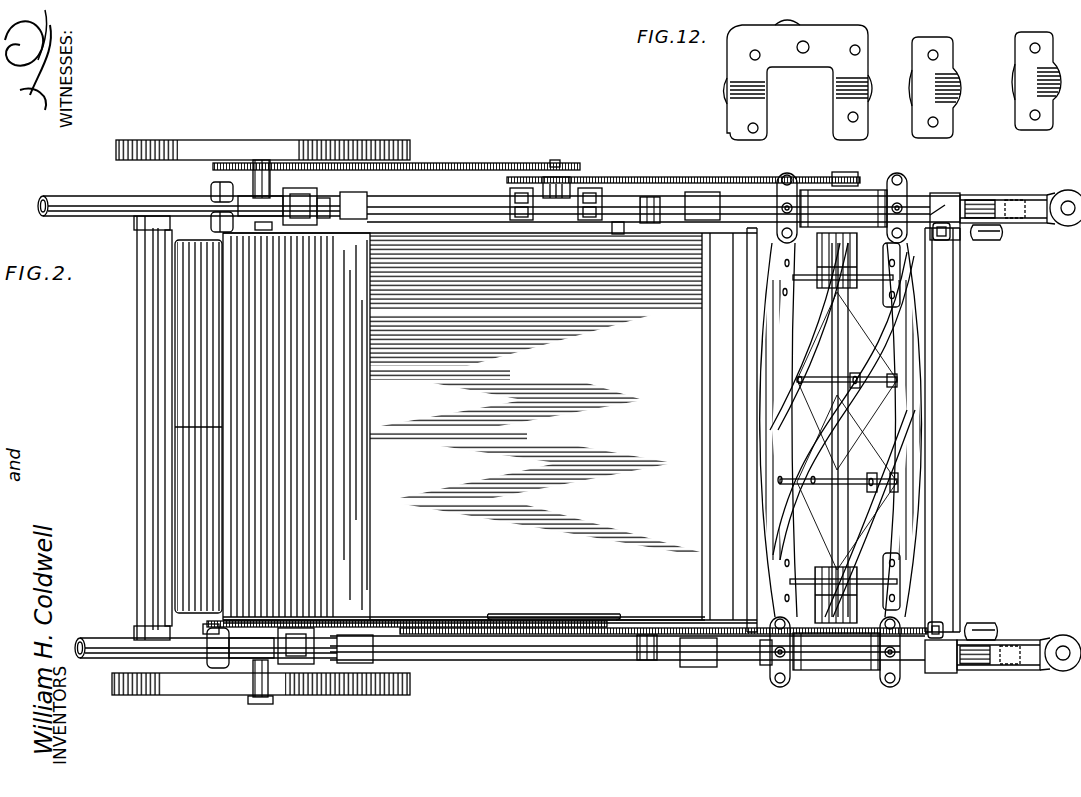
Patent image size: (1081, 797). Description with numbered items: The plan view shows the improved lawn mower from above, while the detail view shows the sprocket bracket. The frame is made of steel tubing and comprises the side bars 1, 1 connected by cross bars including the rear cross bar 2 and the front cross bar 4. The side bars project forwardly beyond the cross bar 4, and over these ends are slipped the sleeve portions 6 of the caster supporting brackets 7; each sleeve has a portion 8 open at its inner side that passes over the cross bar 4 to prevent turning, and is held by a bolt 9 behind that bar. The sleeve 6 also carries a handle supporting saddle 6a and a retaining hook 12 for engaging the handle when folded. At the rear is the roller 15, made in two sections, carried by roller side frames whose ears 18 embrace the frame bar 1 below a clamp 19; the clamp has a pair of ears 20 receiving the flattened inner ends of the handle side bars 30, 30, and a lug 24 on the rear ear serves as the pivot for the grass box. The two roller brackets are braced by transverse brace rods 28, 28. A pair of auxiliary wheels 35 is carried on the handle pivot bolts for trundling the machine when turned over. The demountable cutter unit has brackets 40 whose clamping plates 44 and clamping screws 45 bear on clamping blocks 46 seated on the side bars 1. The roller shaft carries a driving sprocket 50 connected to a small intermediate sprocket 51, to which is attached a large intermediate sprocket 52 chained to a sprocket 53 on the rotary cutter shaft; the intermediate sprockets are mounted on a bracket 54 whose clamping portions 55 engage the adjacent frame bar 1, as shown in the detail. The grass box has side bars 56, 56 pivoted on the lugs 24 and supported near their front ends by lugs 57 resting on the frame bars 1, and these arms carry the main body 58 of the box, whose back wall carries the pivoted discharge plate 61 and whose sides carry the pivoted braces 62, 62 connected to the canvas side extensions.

In FIG. 2, the side bars 1 is at (428, 214).
In FIG. 2, the cross bar 2 is at (135, 522).
In FIG. 2, the cross bar 4 is at (960, 545).
In FIG. 2, the sleeve portion 6 is at (1006, 200).
In FIG. 2, the handle supporting saddle 6a is at (1000, 146).
In FIG. 2, the caster supporting bracket 7 is at (1062, 226).
In FIG. 2, the open portion of sleeve 8 is at (942, 206).
In FIG. 2, the bolt 9 is at (946, 233).
In FIG. 2, the retaining hook 12 is at (992, 236).
In FIG. 2, the roller 15 is at (185, 375).
In FIG. 2, the ears 18 is at (214, 196).
In FIG. 2, the clamp 19 is at (312, 196).
In FIG. 2, the ears 20 is at (264, 192).
In FIG. 2, the lug 24 is at (203, 628).
In FIG. 2, the transverse brace rods 28 is at (165, 568).
In FIG. 2, the handle side bars 30 is at (103, 217).
In FIG. 2, the auxiliary wheels 35 is at (162, 141).
In FIG. 2, the brackets 40 is at (880, 190).
In FIG. 2, the clamping plate 44 is at (790, 678).
In FIG. 2, the clamping screw 45 is at (762, 666).
In FIG. 2, the clamping block 46 is at (842, 690).
In FIG. 2, the driving sprocket 50 is at (221, 163).
In FIG. 2, the small intermediate sprocket 51 is at (578, 177).
In FIG. 2, the large intermediate sprocket 52 is at (516, 177).
In FIG. 2, the sprocket 53 is at (857, 172).
In FIG. 2, the bracket 54 is at (510, 200).
In FIG. 12, the clamping portions 55 is at (826, 60).
In FIG. 2, the side bars 56 is at (618, 235).
In FIG. 2, the lugs 57 is at (662, 205).
In FIG. 2, the main body 58 is at (537, 596).
In FIG. 2, the discharge plate 61 is at (345, 547).
In FIG. 2, the pivoted braces 62 is at (584, 240).